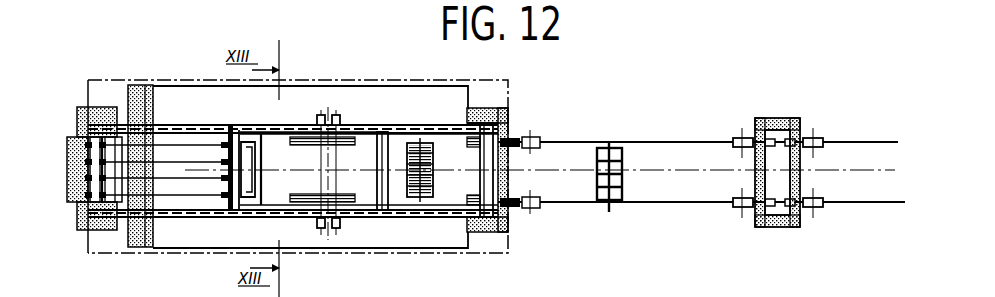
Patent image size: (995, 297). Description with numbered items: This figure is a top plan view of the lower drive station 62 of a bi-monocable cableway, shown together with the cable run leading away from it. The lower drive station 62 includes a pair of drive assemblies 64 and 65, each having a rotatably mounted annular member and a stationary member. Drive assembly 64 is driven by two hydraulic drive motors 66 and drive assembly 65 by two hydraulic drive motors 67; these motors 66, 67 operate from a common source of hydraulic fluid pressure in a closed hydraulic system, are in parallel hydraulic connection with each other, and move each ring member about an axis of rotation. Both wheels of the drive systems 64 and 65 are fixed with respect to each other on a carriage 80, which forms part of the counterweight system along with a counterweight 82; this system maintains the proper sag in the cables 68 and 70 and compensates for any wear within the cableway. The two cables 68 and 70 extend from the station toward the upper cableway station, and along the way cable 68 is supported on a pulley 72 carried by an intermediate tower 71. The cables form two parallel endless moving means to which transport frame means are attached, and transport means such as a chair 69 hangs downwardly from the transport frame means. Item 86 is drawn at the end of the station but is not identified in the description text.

The lower drive station 62 is at (234, 255).
The drive assembly 64 is at (356, 120).
The drive assembly 65 is at (347, 230).
The hydraulic drive motors 66 is at (322, 115).
The hydraulic drive motors 67 is at (319, 224).
The cable 68 is at (694, 142).
The chair 69 is at (626, 198).
The cable 70 is at (703, 204).
The intermediate tower 71 is at (800, 122).
The pulley 72 is at (814, 212).
The carriage 80 is at (238, 127).
The counterweight 82 is at (70, 186).
The mounting block 86 is at (78, 138).